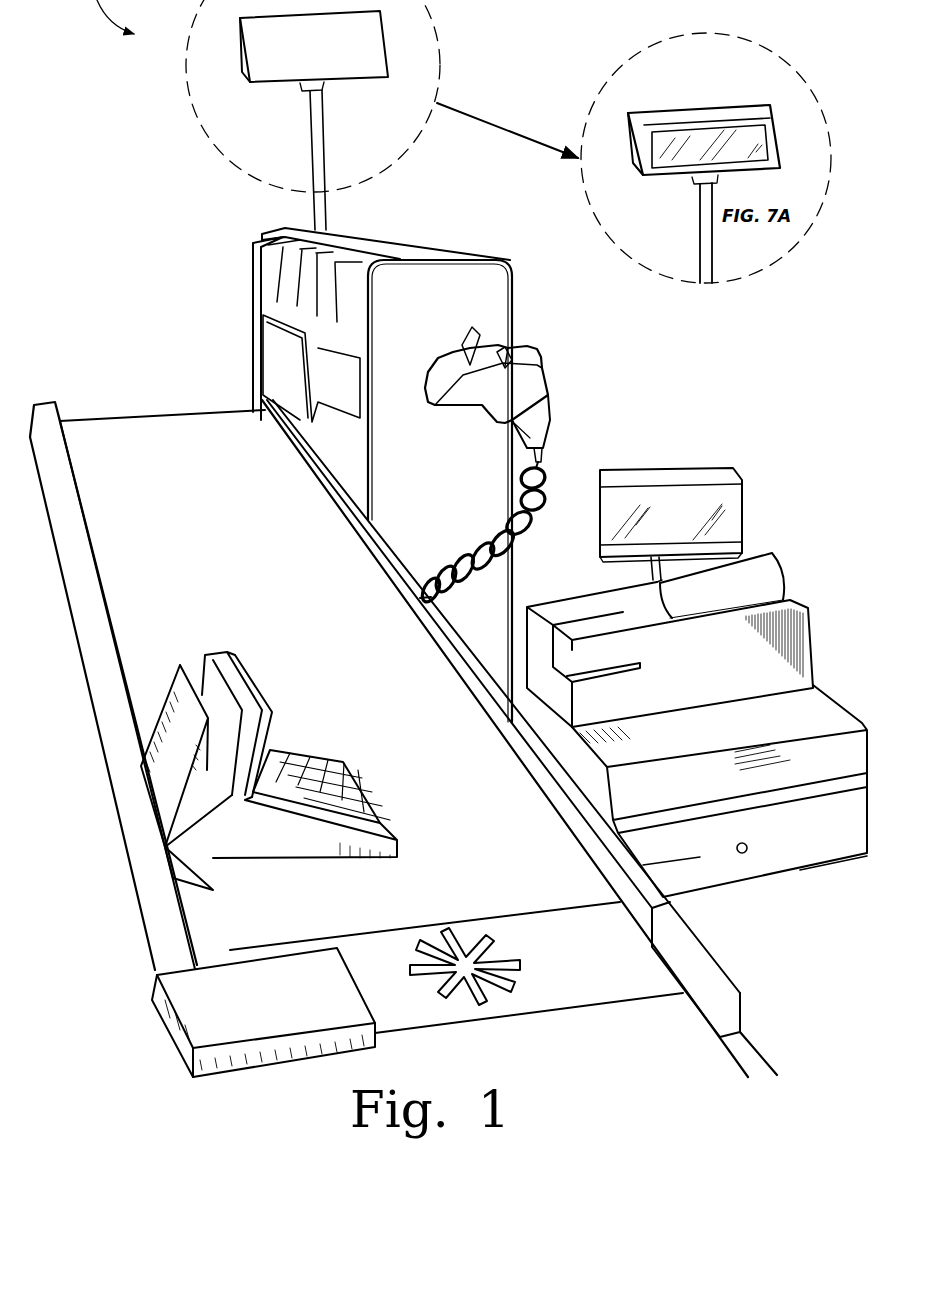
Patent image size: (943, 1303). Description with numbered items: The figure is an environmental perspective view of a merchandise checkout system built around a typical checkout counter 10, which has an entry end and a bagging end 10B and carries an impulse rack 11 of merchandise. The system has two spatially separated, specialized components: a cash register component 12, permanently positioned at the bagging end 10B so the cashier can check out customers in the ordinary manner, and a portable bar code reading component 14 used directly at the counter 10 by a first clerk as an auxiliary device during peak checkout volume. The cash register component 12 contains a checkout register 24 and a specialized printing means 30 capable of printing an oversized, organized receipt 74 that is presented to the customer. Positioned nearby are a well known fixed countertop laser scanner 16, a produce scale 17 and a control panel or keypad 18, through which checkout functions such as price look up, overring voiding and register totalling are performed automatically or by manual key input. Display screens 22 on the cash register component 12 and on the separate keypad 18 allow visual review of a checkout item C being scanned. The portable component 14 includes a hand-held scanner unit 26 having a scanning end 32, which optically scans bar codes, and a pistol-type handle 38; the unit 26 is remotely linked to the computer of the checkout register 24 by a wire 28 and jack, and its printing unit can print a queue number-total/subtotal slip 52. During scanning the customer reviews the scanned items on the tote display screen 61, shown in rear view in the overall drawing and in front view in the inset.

In FIG. 1, the checkout counter 10 is at (404, 738).
In FIG. 1, the bagging end 10B is at (690, 1090).
In FIG. 1, the impulse rack 11 is at (200, 335).
In FIG. 1, the cash register component 12 is at (775, 476).
In FIG. 1, the portable bar code reading component 14 is at (570, 376).
In FIG. 1, the fixed countertop laser scanner 16 is at (500, 955).
In FIG. 1, the produce scale 17 is at (529, 991).
In FIG. 1, the keypad 18 is at (383, 807).
In FIG. 1, the display screen 22 is at (263, 690).
In FIG. 1, the checkout register 24 is at (670, 654).
In FIG. 1, the hand-held scanner unit 26 is at (486, 384).
In FIG. 1, the wire 28 is at (453, 541).
In FIG. 1, the printing means 30 is at (790, 602).
In FIG. 1, the scanning end 32 is at (452, 405).
In FIG. 1, the pistol-type handle 38 is at (543, 423).
In FIG. 1, the queue number-total/subtotal slip 52 is at (482, 316).
In FIG. 1, the tote display screen 61 is at (314, 120).
In FIG. 1A, the tote display screen 61 is at (688, 108).
In FIG. 1, the receipt 74 is at (722, 585).
In FIG. 1, the checkout item C is at (263, 1012).